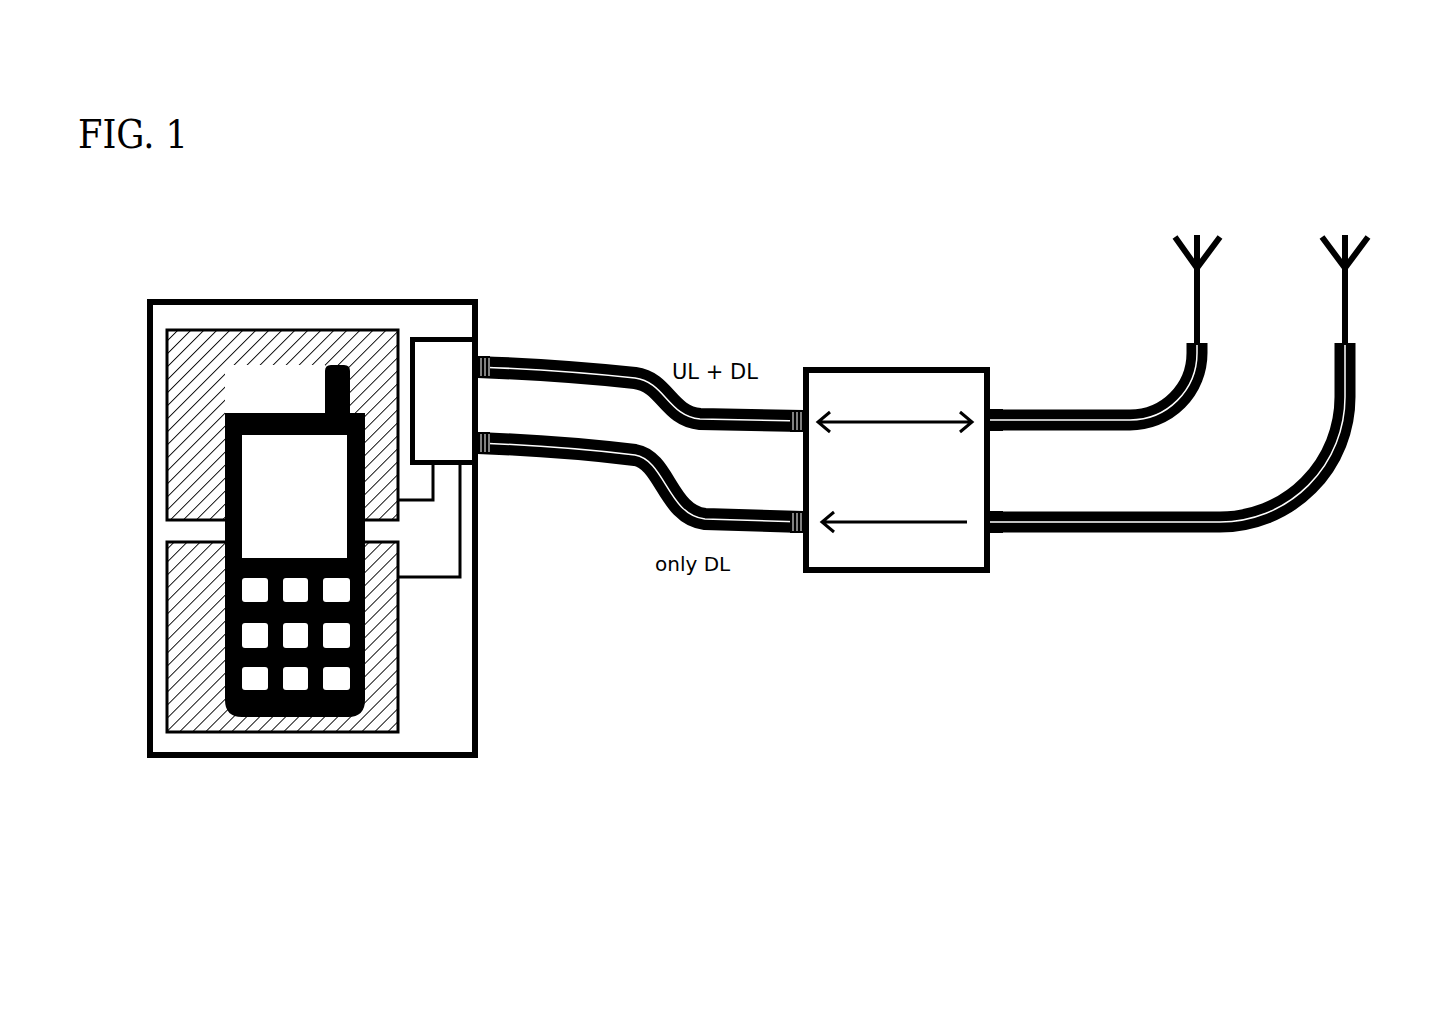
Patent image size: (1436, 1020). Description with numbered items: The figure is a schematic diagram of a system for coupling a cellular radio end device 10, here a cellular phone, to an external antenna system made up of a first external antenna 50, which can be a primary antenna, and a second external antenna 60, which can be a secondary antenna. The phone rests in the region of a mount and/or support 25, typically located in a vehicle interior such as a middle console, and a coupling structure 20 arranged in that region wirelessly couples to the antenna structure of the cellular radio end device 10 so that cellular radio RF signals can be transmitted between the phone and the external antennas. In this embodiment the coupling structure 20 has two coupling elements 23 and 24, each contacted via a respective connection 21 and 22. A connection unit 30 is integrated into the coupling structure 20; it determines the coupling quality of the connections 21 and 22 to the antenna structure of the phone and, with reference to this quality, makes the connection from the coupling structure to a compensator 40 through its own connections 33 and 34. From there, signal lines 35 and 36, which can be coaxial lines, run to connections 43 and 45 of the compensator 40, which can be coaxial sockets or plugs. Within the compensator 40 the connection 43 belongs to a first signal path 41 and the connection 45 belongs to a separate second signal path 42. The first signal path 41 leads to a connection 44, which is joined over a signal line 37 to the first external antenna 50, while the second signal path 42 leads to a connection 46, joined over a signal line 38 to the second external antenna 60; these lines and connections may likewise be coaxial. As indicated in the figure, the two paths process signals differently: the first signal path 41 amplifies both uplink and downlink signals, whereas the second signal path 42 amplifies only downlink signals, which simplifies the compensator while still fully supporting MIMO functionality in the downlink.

The cellular radio end device 10 is at (295, 541).
The coupling structure 20 is at (314, 254).
The connection 21 is at (397, 503).
The connection 22 is at (400, 583).
The coupling element 23 is at (167, 412).
The coupling element 24 is at (167, 638).
The mount and/or support 25 is at (209, 312).
The connection unit 30 is at (428, 335).
The connection 33 is at (490, 340).
The connection 34 is at (488, 427).
The signal line 35 is at (632, 365).
The signal line 36 is at (635, 483).
The signal line 37 is at (1172, 408).
The signal line 38 is at (1253, 507).
The compensator 40 is at (877, 383).
The first signal path 41 is at (868, 428).
The second signal path 42 is at (880, 528).
The connection 43 is at (795, 440).
The connection 44 is at (995, 432).
The connection 45 is at (793, 540).
The connection 46 is at (998, 535).
The first external antenna 50 is at (1225, 290).
The second external antenna 60 is at (1377, 290).